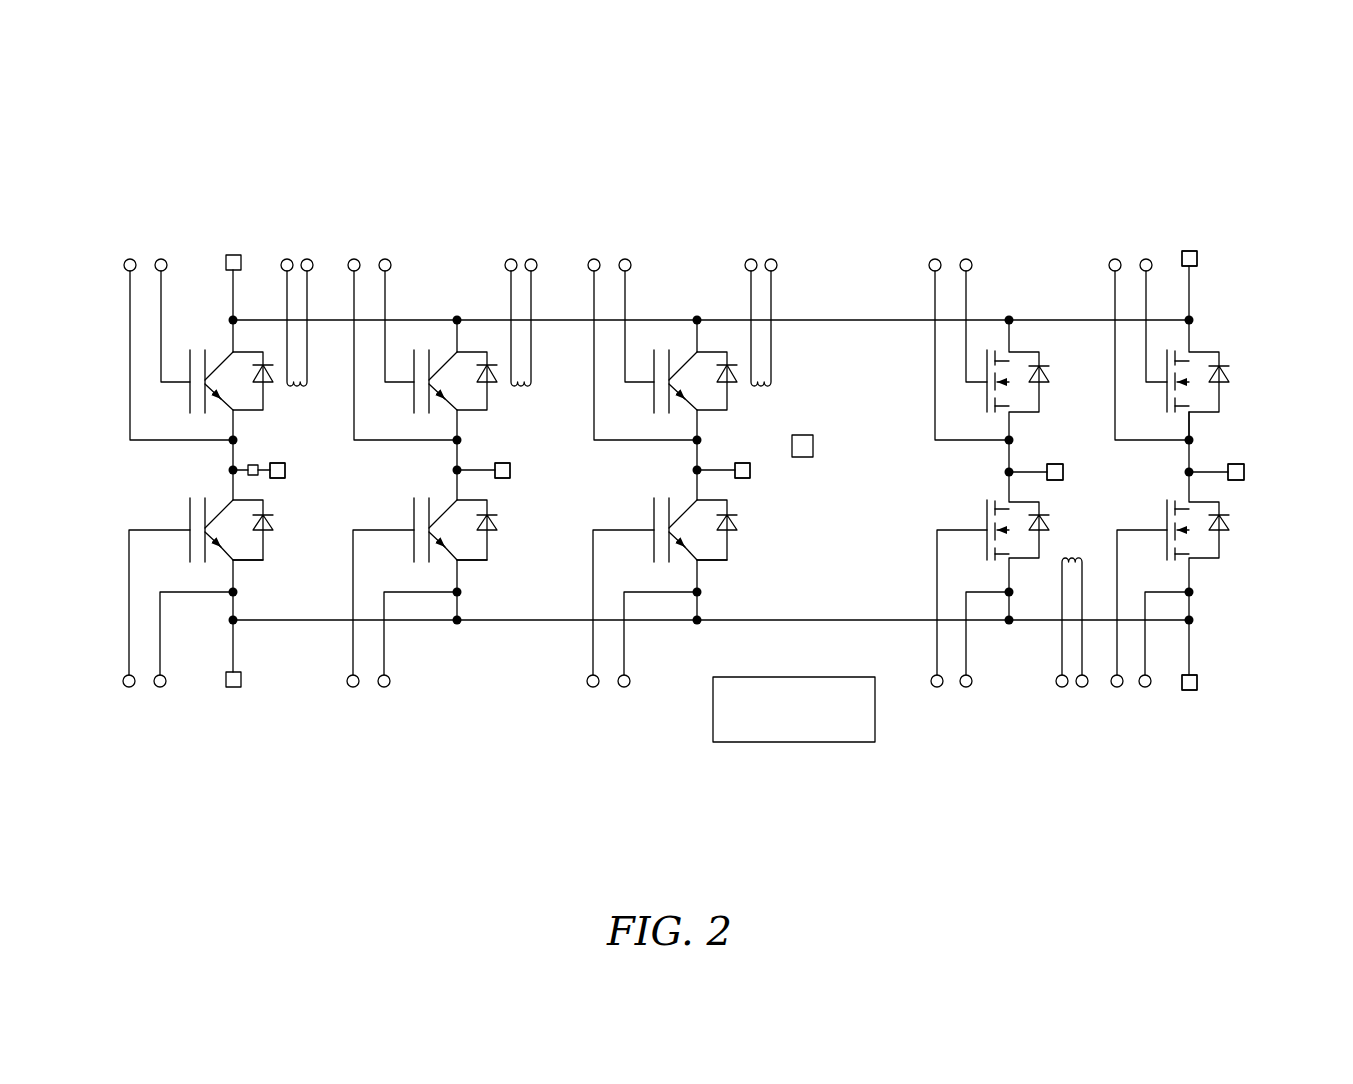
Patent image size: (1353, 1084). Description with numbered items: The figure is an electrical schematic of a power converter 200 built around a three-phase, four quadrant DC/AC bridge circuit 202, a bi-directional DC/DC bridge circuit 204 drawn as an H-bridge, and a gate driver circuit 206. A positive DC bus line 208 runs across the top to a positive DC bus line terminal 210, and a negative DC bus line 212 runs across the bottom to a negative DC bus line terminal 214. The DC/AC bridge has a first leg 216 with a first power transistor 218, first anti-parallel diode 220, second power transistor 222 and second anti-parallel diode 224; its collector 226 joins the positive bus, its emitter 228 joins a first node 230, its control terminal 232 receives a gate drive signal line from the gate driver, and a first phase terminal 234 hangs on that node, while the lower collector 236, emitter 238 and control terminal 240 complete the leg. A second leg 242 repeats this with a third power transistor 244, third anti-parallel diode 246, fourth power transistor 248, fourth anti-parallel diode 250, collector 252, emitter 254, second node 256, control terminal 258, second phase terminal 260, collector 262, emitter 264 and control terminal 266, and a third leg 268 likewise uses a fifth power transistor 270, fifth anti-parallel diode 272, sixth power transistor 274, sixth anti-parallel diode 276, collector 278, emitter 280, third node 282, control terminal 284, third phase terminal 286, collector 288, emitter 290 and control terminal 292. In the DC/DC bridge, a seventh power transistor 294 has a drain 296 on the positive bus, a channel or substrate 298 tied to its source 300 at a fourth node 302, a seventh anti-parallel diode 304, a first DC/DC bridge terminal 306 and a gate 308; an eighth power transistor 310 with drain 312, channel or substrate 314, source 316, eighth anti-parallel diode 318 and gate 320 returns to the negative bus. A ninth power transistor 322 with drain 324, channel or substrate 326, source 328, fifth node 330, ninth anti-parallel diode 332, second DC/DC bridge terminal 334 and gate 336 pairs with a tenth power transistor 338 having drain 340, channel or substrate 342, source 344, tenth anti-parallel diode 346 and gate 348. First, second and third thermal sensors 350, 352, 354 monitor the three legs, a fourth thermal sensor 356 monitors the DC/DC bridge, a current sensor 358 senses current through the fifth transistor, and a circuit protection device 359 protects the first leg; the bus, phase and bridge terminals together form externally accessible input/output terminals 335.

The power converter 200 is at (1068, 100).
The DC/AC bridge circuit 202 is at (448, 192).
The DC/DC bridge circuit 204 is at (1018, 177).
The gate driver circuit 206 is at (817, 742).
The positive DC bus line 208 is at (800, 320).
The positive DC bus line terminal 210 is at (1197, 255).
The negative DC bus line 212 is at (797, 620).
The negative DC bus line terminal 214 is at (1198, 690).
The first leg 216 is at (235, 208).
The first power transistor 218 is at (223, 345).
The first anti-parallel diode 220 is at (279, 389).
The second power transistor 222 is at (218, 492).
The second anti-parallel diode 224 is at (276, 541).
The collector 226 is at (223, 366).
The emitter 228 is at (217, 401).
The first node 230 is at (240, 440).
The control terminal 232 is at (178, 383).
The first phase terminal 234 is at (288, 478).
The collector 236 is at (245, 556).
The emitter 238 is at (217, 558).
The control terminal 240 is at (190, 529).
The second leg 242 is at (467, 220).
The third power transistor 244 is at (448, 337).
The third anti-parallel diode 246 is at (503, 389).
The fourth power transistor 248 is at (442, 492).
The fourth anti-parallel diode 250 is at (500, 541).
The collector 252 is at (447, 366).
The emitter 254 is at (441, 401).
The second node 256 is at (464, 440).
The control terminal 258 is at (402, 383).
The second phase terminal 260 is at (533, 480).
The collector 262 is at (469, 556).
The emitter 264 is at (441, 558).
The control terminal 266 is at (414, 529).
The third leg 268 is at (698, 200).
The fifth power transistor 270 is at (688, 337).
The fifth anti-parallel diode 272 is at (743, 389).
The sixth power transistor 274 is at (682, 492).
The sixth anti-parallel diode 276 is at (740, 541).
The collector 278 is at (687, 366).
The emitter 280 is at (681, 401).
The third node 282 is at (704, 440).
The control terminal 284 is at (642, 383).
The third phase terminal 286 is at (773, 480).
The collector 288 is at (709, 556).
The emitter 290 is at (681, 558).
The control terminal 292 is at (654, 529).
The seventh power transistor 294 is at (970, 390).
The drain 296 is at (1005, 356).
The channel or substrate 298 is at (1010, 387).
The source 300 is at (998, 407).
The fourth node 302 is at (1013, 440).
The seventh anti-parallel diode 304 is at (1055, 378).
The first DC/DC bridge terminal 306 is at (1058, 463).
The gate 308 is at (967, 381).
The eighth power transistor 310 is at (972, 512).
The drain 312 is at (1005, 502).
The channel or substrate 314 is at (1010, 537).
The source 316 is at (1002, 562).
The eighth anti-parallel diode 318 is at (1060, 512).
The gate 320 is at (983, 530).
The ninth power transistor 322 is at (1177, 407).
The drain 324 is at (1187, 355).
The channel or substrate 326 is at (1190, 382).
The source 328 is at (1192, 418).
The fifth node 330 is at (1195, 440).
The ninth anti-parallel diode 332 is at (1240, 363).
The second DC/DC bridge terminal 334 is at (1240, 480).
The input/output terminals 335 is at (280, 462).
The gate 336 is at (1160, 392).
The tenth power transistor 338 is at (1152, 518).
The drain 340 is at (1188, 502).
The channel or substrate 342 is at (1192, 537).
The source 344 is at (1182, 562).
The tenth anti-parallel diode 346 is at (1243, 518).
The gate 348 is at (1157, 535).
The first thermal sensor 350 is at (302, 385).
The second thermal sensor 352 is at (526, 385).
The third thermal sensor 354 is at (766, 385).
The fourth thermal sensor 356 is at (1068, 560).
The current sensor 358 is at (813, 446).
The circuit protection device 359 is at (253, 478).